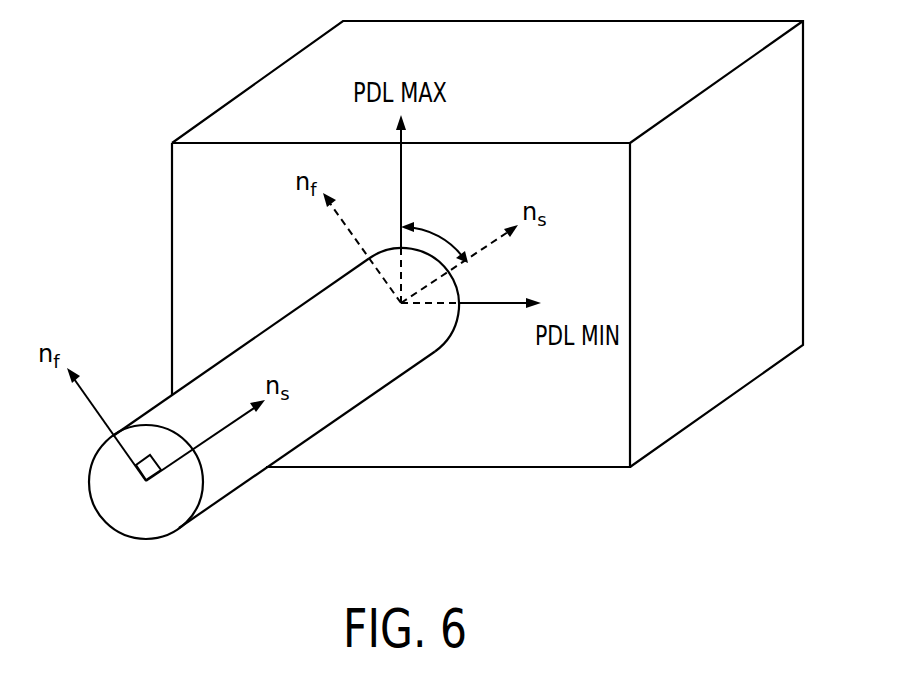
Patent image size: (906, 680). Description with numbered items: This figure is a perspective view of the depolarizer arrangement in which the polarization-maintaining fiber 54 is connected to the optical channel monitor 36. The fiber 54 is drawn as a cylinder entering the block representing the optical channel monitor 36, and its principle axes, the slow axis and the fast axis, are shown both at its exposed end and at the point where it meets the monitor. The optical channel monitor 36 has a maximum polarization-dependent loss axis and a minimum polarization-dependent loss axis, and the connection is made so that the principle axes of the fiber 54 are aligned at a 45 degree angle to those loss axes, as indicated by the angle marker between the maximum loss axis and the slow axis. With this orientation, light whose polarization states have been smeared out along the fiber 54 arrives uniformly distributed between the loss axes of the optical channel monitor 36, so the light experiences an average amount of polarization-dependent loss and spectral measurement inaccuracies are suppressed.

The optical channel monitor 36 is at (704, 399).
The polarization-maintaining fiber 54 is at (243, 482).
The 45 degree angle between PDL MAX axis and slow axis n_s 45 is at (434, 231).